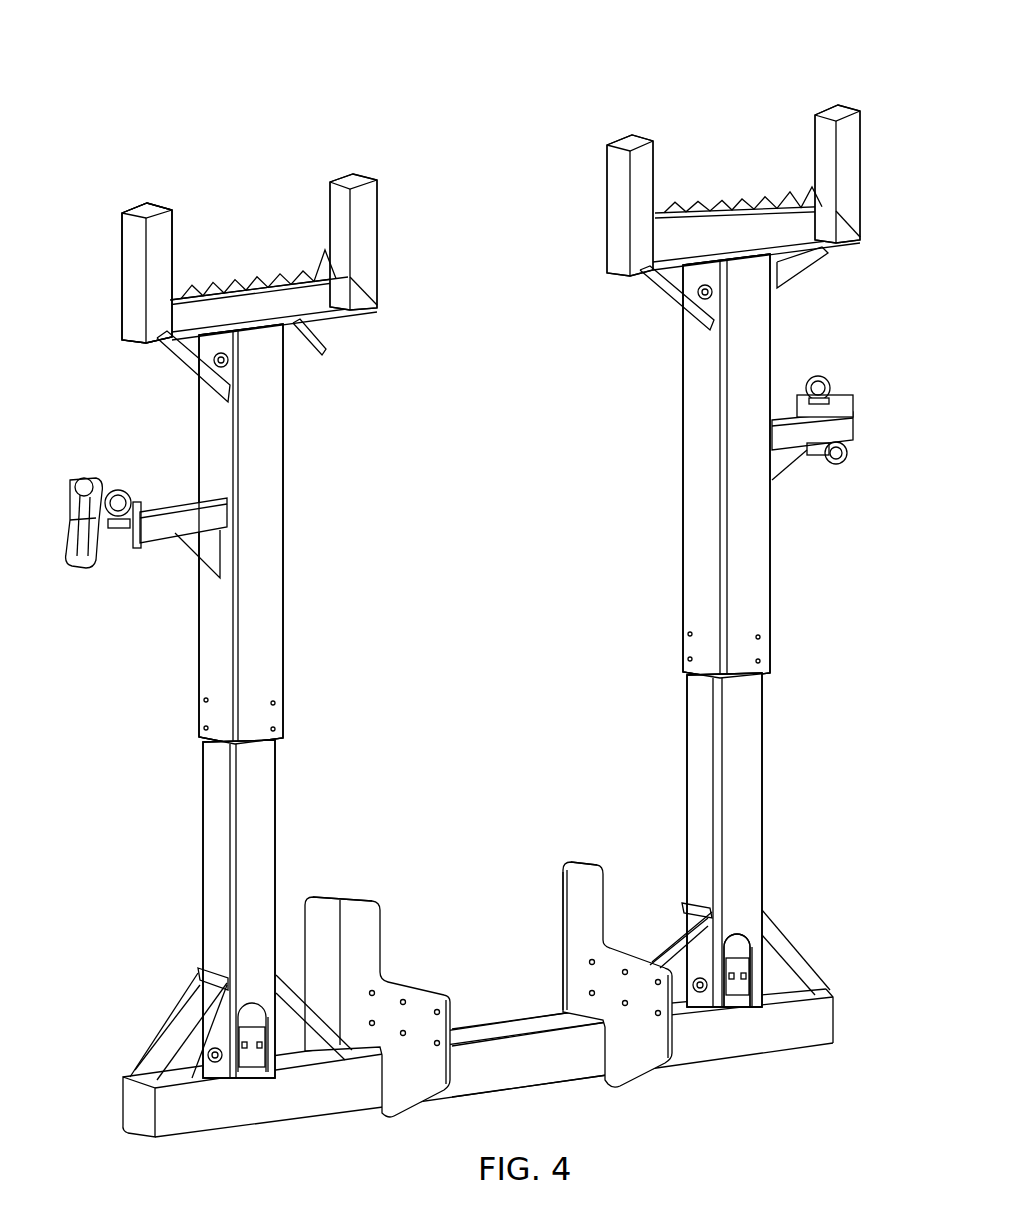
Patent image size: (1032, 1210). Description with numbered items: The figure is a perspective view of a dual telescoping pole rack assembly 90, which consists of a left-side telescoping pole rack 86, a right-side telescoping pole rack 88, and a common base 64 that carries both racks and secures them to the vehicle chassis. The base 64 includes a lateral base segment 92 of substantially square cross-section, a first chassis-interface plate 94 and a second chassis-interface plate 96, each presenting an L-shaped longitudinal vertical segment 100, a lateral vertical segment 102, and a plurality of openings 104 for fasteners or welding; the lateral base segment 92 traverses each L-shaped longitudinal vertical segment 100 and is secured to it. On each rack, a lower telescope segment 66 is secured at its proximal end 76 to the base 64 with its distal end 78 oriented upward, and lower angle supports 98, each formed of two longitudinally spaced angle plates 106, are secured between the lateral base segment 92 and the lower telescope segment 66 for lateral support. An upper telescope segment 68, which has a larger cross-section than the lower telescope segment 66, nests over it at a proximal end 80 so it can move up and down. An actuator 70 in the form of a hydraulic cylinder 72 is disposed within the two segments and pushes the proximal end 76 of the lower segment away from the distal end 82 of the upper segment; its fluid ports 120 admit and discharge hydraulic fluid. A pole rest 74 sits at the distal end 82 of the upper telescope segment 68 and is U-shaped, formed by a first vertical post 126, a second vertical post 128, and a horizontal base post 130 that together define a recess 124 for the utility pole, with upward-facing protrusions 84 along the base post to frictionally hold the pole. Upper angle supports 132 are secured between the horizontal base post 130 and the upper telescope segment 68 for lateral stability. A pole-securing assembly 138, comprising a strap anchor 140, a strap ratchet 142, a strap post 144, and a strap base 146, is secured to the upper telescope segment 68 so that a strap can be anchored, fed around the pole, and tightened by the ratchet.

The base 64 is at (318, 1097).
The lower telescope segment 66 is at (205, 865).
The upper telescope segment 68 is at (280, 505).
The actuator 70 is at (248, 1005).
The hydraulic cylinder 72 is at (738, 948).
The pole rest 74 is at (116, 226).
The proximal end 76 is at (194, 965).
The distal end 78 is at (483, 875).
The proximal end 80 is at (482, 499).
The distal end 82 is at (491, 333).
The upward-facing protrusions 84 is at (234, 258).
The left-side telescoping pole rack 86 is at (273, 227).
The right-side telescoping pole rack 88 is at (724, 76).
The dual telescoping pole rack assembly 90 is at (476, 85).
The lateral base segment 92 is at (553, 1062).
The first chassis-interface plate 94 is at (425, 1090).
The second chassis-interface plate 96 is at (630, 1072).
The lower angle supports 98 is at (180, 1006).
The L-shaped longitudinal vertical segment 100 is at (352, 905).
The lateral vertical segment 102 is at (318, 905).
The openings 104 is at (658, 986).
The angle plates 106 is at (190, 1065).
The fluid port 120 is at (259, 1050).
The recess 124 is at (301, 203).
The first vertical post 126 is at (158, 218).
The second vertical post 128 is at (365, 203).
The horizontal base post 130 is at (345, 300).
The upper angle support 132 is at (185, 348).
The pole-securing assembly 138 is at (80, 586).
The strap anchor 140 is at (120, 488).
The strap ratchet 142 is at (80, 472).
The strap post 144 is at (150, 507).
The strap base 146 is at (132, 545).